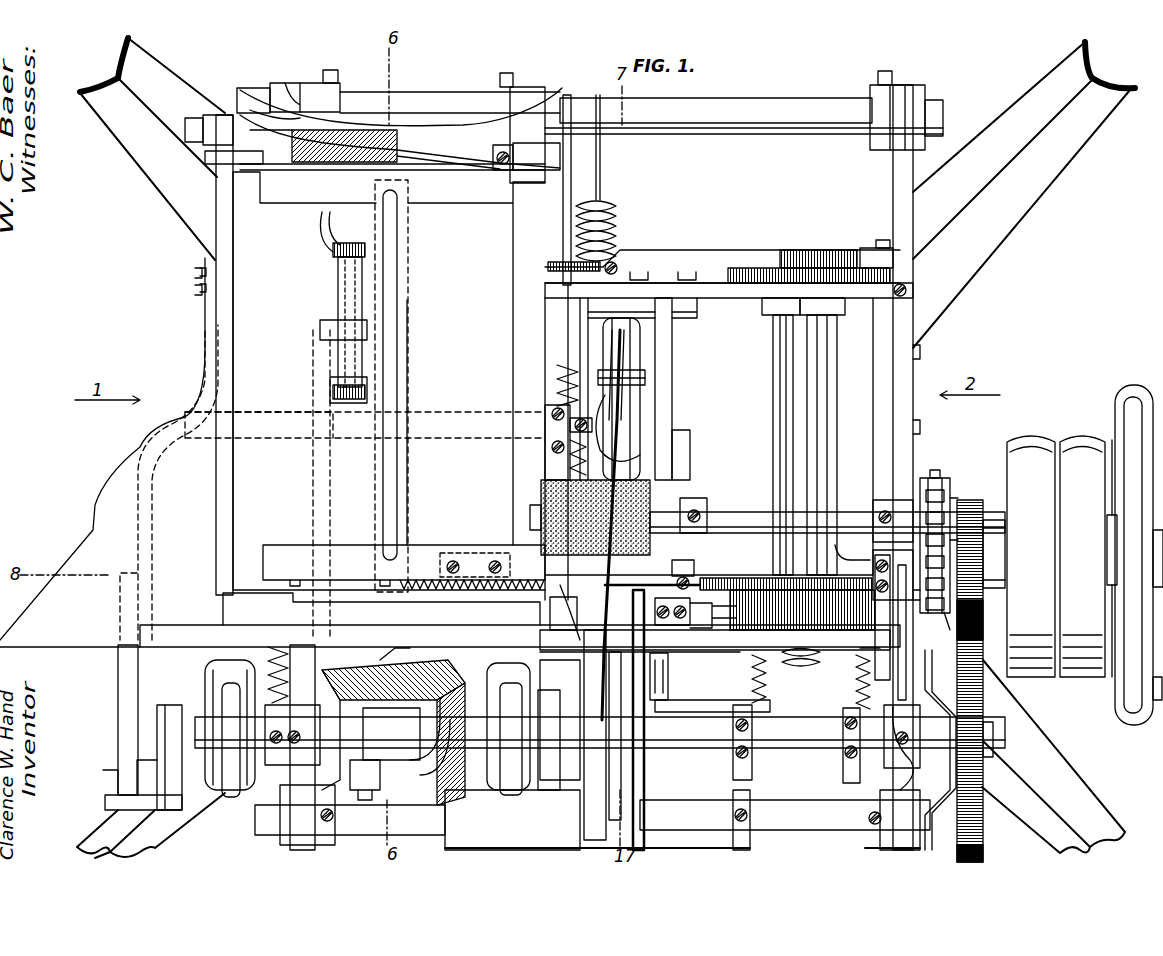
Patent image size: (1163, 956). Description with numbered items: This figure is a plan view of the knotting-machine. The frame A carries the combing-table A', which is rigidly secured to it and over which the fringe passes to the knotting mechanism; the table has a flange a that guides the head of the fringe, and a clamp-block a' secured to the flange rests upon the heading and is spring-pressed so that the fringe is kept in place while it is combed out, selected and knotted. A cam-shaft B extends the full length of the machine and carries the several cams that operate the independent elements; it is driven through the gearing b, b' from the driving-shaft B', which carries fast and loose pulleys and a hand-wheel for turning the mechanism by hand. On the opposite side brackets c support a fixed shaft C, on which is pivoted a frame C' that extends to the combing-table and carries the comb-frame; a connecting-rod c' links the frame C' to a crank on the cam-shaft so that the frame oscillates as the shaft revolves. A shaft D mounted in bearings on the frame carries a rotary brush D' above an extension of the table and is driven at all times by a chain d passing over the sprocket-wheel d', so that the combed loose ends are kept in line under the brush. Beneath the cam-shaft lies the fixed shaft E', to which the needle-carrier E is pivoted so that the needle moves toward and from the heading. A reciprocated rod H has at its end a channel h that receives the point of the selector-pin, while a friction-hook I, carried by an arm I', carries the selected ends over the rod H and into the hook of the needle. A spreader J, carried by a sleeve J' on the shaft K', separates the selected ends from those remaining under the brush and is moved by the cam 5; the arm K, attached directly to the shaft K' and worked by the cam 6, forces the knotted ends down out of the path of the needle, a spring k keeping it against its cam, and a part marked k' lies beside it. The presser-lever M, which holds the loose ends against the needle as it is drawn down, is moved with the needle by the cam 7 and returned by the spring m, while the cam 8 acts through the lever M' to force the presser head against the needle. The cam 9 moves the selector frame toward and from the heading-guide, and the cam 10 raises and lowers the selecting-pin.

The frame A is at (729, 441).
The combing-table A' is at (365, 406).
The flange a is at (450, 622).
The clamp-block a' is at (381, 609).
The cam-shaft B is at (600, 733).
The driving-shaft B' is at (994, 638).
The gear wheel b is at (970, 669).
The gear wheel b' is at (994, 828).
The fixed shaft C is at (641, 110).
The frame C' is at (330, 449).
The bracket c is at (578, 457).
The connecting-rod c' is at (194, 289).
The brush shaft D is at (827, 549).
The rotary brush D' is at (590, 517).
The chain d is at (953, 501).
The sprocket-wheel d' is at (931, 613).
The needle-carrier E is at (785, 820).
The fixed shaft E' is at (850, 820).
The reciprocated rod H is at (700, 578).
The channel h is at (623, 525).
The friction-hook I is at (615, 736).
The arm I' is at (659, 676).
The spreader J is at (595, 735).
The sleeve J' is at (712, 700).
The arm K is at (647, 720).
The shaft K' is at (801, 683).
The spring k is at (871, 674).
The bracket k' is at (940, 750).
The presser-lever M is at (417, 755).
The lever M' is at (424, 750).
The spring m is at (568, 493).
The cam 5 is at (748, 762).
The cam 6 is at (848, 760).
The cam 7 is at (549, 740).
The cam 8 is at (391, 734).
The cam 9 is at (508, 720).
The cam 10 is at (234, 740).